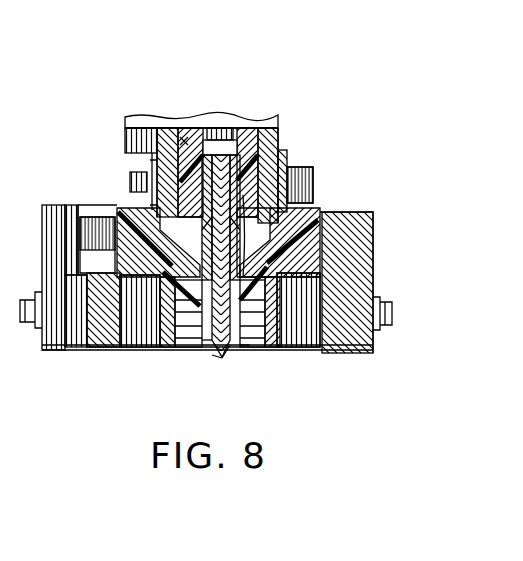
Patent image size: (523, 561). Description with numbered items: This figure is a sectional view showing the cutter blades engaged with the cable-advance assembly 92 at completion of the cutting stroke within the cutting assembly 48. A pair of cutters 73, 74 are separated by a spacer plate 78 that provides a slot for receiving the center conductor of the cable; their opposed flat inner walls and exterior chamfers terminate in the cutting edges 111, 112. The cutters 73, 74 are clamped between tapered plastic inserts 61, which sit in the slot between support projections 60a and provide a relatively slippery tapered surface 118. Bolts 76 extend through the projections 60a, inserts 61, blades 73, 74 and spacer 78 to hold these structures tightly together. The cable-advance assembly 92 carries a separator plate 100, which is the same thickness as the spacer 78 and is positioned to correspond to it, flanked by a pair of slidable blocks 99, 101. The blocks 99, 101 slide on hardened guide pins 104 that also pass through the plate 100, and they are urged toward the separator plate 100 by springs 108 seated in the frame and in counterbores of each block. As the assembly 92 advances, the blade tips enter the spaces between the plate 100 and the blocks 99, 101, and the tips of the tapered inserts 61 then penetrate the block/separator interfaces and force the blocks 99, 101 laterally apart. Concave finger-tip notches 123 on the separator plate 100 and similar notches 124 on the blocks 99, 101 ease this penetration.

The cutting assembly 48 is at (283, 131).
The tapered plastic inserts 61 is at (190, 150).
The spacer plate 78 is at (217, 148).
The support projections 60a is at (167, 160).
The finger-tip notches 123 is at (306, 173).
The bolts 76 is at (228, 240).
The slidable block 99 is at (300, 222).
The slidable block 101 is at (127, 212).
The springs 108 is at (97, 213).
The notches 124 is at (316, 250).
The tapered surface 118 is at (165, 290).
The cutter 74 is at (190, 352).
The cable-advance assembly 92 is at (376, 220).
The guide pins 104 is at (382, 306).
The cutting edge 112 is at (213, 352).
The separator plate 100 is at (222, 355).
The cutting edge 111 is at (231, 352).
The cutter 73 is at (248, 352).